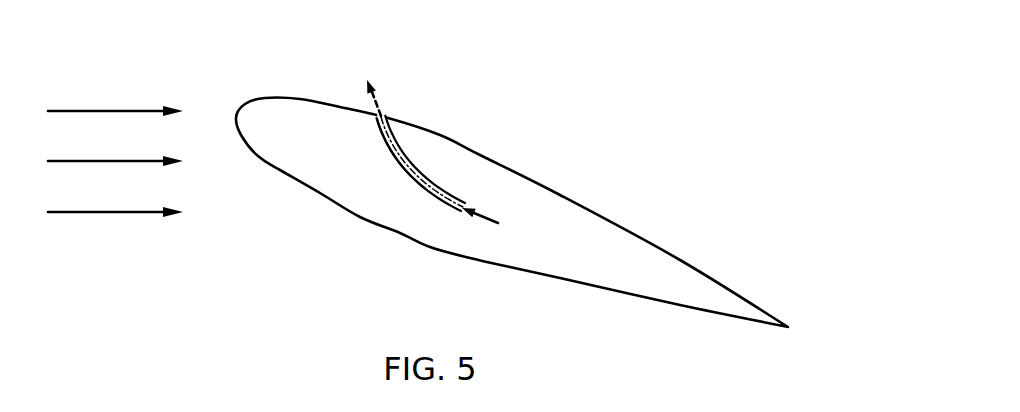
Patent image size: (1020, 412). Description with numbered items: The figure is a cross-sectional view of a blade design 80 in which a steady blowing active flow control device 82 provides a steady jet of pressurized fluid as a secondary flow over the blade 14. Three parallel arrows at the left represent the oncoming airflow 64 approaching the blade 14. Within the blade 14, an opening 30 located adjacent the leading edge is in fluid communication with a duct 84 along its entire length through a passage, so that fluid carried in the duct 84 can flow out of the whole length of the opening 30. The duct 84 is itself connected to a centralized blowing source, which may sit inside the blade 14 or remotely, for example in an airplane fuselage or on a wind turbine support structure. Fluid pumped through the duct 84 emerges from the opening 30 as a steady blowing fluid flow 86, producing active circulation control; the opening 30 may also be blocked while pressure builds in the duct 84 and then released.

The blade 14 is at (618, 242).
The opening 30 is at (388, 117).
The incoming airflow 64 is at (124, 109).
The blade design 80 is at (622, 46).
The steady blowing active flow control device 82 is at (432, 192).
The duct 84 is at (412, 183).
The steady blowing fluid flow 86 is at (364, 89).